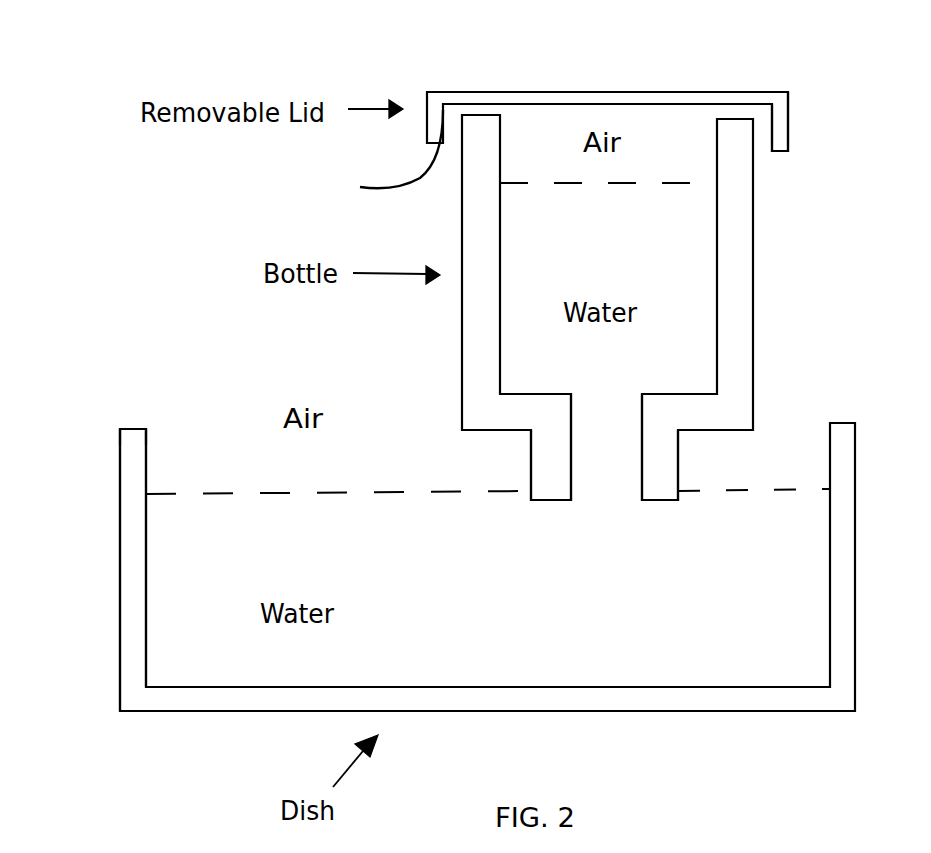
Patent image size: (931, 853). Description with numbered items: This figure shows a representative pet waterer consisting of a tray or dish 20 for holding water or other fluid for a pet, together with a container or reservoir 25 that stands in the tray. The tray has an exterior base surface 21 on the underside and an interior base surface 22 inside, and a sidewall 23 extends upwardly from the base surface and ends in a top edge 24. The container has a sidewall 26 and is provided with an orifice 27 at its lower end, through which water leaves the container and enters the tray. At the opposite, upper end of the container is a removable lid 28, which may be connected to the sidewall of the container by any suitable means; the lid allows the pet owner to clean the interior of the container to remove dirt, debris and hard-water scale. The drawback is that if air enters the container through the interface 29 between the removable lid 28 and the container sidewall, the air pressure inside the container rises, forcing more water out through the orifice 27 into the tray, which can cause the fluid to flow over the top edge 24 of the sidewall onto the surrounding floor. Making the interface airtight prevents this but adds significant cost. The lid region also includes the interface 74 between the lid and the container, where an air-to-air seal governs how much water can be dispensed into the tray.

The tray or dish 20 is at (743, 710).
The exterior base surface 21 is at (200, 711).
The interior base surface 22 is at (463, 683).
The sidewall 23 is at (120, 612).
The top edge 24 is at (122, 427).
The container or reservoir 25 is at (462, 227).
The sidewall 26 is at (753, 273).
The orifice 27 is at (589, 476).
The removable lid 28 is at (508, 93).
The interface 29 is at (754, 123).
The interface 74 is at (381, 153).